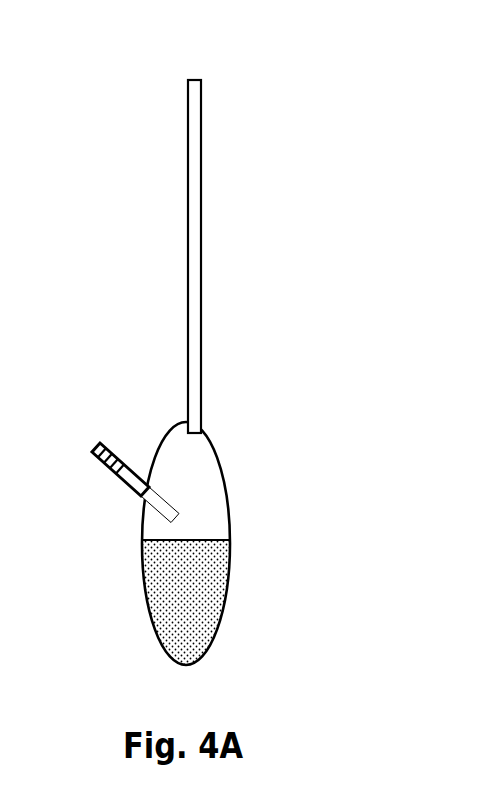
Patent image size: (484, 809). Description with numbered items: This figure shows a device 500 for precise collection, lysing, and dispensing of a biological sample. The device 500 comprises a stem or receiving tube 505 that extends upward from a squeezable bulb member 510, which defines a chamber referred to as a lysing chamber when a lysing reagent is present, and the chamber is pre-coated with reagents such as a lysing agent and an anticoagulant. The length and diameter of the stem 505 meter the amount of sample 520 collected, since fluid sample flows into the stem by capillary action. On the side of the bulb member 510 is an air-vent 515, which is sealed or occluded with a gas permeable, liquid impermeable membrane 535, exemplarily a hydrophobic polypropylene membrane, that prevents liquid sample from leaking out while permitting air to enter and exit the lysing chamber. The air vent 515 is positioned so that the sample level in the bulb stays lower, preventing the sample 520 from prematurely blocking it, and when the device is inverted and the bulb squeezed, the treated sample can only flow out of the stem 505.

The device 500 is at (179, 46).
The stem or receiving tube 505 is at (200, 237).
The squeezable bulb member 510 is at (227, 592).
The air-vent 515 is at (97, 446).
The sample 520 is at (179, 540).
The gas permeable, liquid impermeable membrane 535 is at (103, 463).